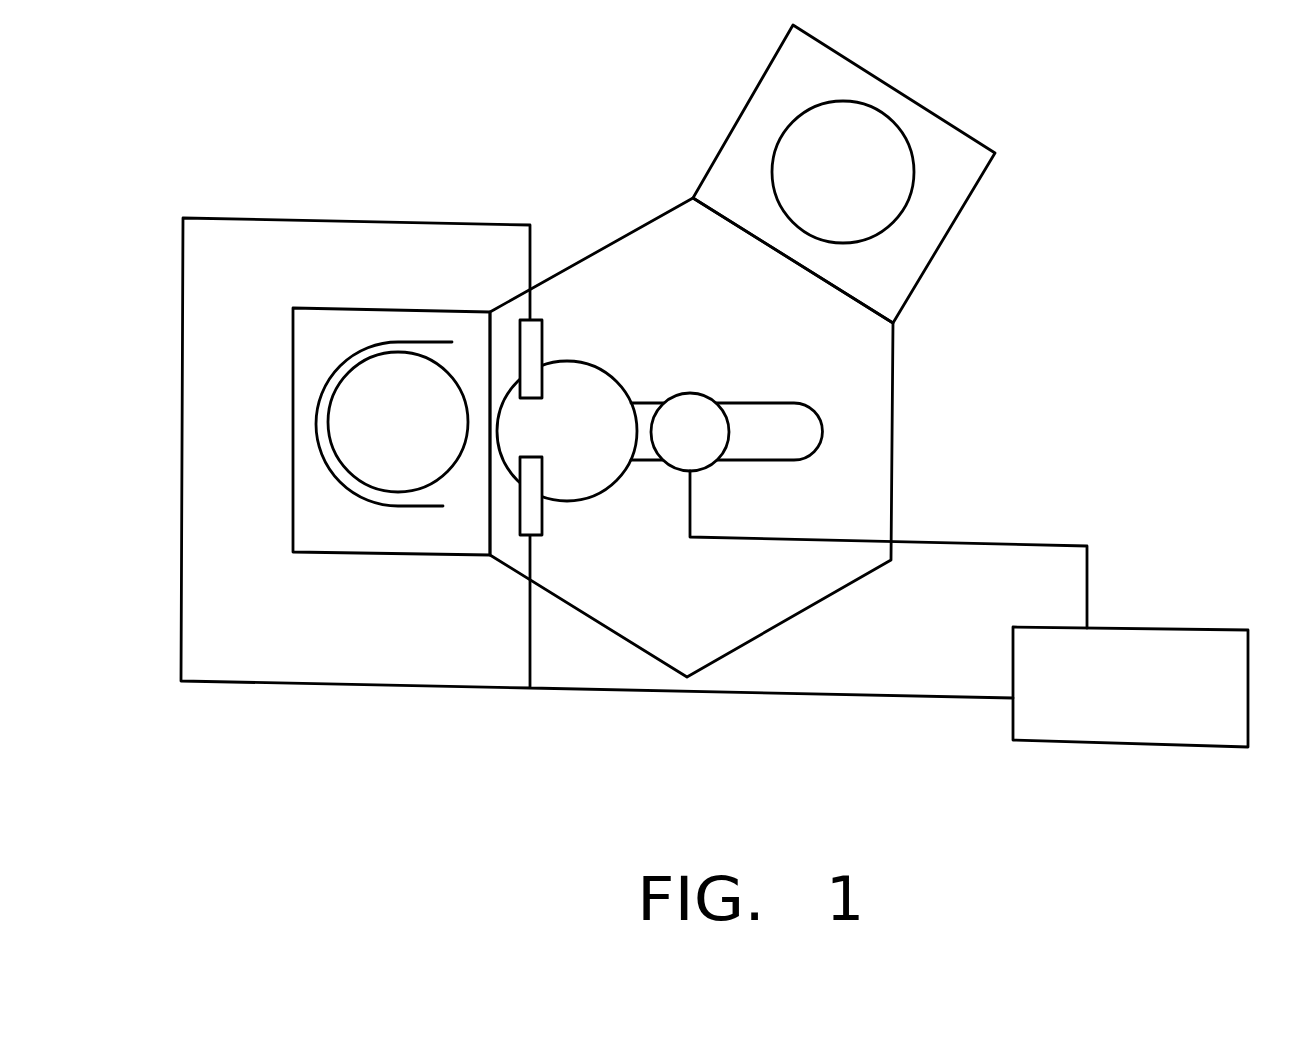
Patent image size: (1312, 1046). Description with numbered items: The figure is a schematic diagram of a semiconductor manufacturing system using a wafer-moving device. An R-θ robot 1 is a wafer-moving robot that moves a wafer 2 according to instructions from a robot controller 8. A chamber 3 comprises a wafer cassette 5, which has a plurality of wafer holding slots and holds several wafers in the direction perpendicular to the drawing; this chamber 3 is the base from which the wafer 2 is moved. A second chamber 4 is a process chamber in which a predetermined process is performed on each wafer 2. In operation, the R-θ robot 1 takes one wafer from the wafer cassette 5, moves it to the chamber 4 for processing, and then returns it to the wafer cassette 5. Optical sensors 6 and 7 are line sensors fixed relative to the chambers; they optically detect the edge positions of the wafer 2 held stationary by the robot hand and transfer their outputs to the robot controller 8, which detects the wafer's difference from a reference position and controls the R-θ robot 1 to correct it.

The R-θ robot 1 is at (760, 402).
The wafer 2 is at (608, 362).
The chamber 3 is at (293, 531).
The chamber 4 is at (965, 198).
The wafer cassette 5 is at (316, 418).
The optical sensor 6 is at (543, 527).
The optical sensor 7 is at (543, 330).
The robot controller 8 is at (1250, 661).